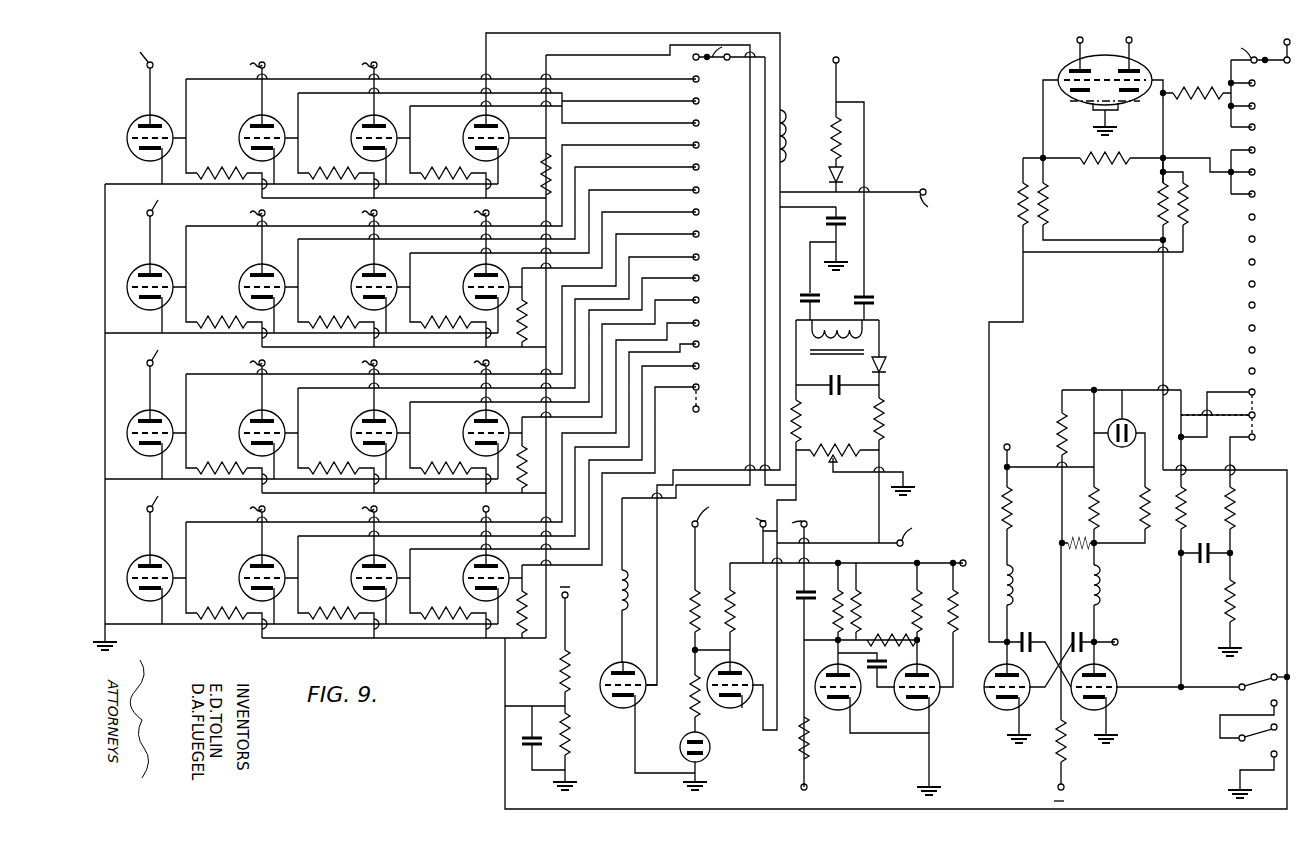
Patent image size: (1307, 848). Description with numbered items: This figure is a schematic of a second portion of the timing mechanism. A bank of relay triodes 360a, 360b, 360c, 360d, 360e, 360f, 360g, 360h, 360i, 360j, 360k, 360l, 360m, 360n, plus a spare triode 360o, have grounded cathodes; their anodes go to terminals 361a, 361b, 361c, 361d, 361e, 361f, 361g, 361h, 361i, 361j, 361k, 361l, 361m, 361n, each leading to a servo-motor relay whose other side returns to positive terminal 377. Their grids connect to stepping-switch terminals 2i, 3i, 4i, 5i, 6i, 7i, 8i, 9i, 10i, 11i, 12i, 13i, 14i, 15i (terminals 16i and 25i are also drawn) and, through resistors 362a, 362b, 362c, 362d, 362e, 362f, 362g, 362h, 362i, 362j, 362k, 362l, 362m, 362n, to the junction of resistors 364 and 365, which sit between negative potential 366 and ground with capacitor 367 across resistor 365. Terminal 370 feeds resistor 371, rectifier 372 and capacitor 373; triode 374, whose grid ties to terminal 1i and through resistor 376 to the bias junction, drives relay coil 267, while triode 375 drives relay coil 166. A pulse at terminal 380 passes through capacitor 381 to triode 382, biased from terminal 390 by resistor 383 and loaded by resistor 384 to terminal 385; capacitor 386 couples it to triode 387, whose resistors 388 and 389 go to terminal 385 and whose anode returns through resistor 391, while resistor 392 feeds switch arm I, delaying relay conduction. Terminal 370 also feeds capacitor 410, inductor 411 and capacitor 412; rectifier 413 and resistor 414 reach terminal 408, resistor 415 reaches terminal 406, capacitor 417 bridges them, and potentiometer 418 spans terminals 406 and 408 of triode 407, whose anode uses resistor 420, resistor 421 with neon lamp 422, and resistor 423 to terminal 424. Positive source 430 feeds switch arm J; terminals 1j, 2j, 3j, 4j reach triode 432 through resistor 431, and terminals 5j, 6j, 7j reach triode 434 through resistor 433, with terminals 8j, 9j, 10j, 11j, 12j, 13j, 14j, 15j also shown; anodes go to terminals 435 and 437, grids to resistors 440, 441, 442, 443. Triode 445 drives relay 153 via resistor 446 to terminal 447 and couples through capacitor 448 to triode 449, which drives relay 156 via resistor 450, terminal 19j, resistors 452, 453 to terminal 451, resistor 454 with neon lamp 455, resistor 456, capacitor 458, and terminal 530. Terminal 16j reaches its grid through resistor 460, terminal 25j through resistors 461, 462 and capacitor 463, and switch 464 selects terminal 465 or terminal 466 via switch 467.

The relay 153 is at (1012, 582).
The relay 156 is at (1108, 586).
The relay coil 166 is at (618, 612).
The relay coil 267 is at (802, 148).
The triode 360a is at (143, 118).
The triode 360b is at (247, 118).
The triode 360c is at (357, 118).
The triode 360d is at (137, 304).
The triode 360e is at (247, 267).
The triode 360f is at (355, 267).
The triode 360g is at (469, 267).
The triode 360h is at (152, 450).
The triode 360i is at (245, 413).
The triode 360j is at (355, 413).
The triode 360k is at (469, 413).
The triode 360l is at (152, 595).
The triode 360m is at (253, 559).
The triode 360n is at (359, 559).
The spare triode 360o is at (469, 559).
The terminal 361a is at (123, 77).
The terminal 361b is at (237, 77).
The terminal 361c is at (349, 77).
The terminal 361d is at (176, 225).
The terminal 361e is at (237, 232).
The terminal 361f is at (349, 232).
The terminal 361g is at (459, 232).
The terminal 361h is at (176, 373).
The terminal 361i is at (240, 380).
The terminal 361j is at (348, 380).
The terminal 361k is at (459, 380).
The terminal 361l is at (173, 518).
The terminal 361m is at (236, 526).
The terminal 361n is at (348, 526).
The resistor 362a is at (241, 172).
The resistor 362b is at (353, 172).
The resistor 362c is at (463, 172).
The resistor 362d is at (241, 321).
The resistor 362e is at (353, 321).
The resistor 362f is at (461, 321).
The resistor 362g is at (522, 342).
The resistor 362h is at (241, 467).
The resistor 362i is at (349, 467).
The resistor 362j is at (459, 467).
The resistor 362k is at (522, 488).
The resistor 362l is at (237, 613).
The resistor 362m is at (359, 613).
The resistor 362n is at (463, 613).
The resistor 364 is at (562, 672).
The resistor 365 is at (570, 755).
The negative potential 366 is at (568, 598).
The capacitor 367 is at (525, 742).
The terminal 370 is at (840, 58).
The resistor 371 is at (834, 127).
The rectifier 372 is at (846, 177).
The capacitor 373 is at (846, 224).
The triode 374 is at (462, 120).
The triode 375 is at (616, 710).
The resistor 376 is at (544, 178).
The positive potential terminal 377 is at (943, 203).
The terminal 380 is at (819, 552).
The capacitor 381 is at (830, 578).
The triode 382 is at (857, 708).
The resistor 383 is at (812, 760).
The resistor 384 is at (852, 584).
The positive potential terminal 385 is at (962, 560).
The capacitor 386 is at (890, 660).
The triode 387 is at (935, 708).
The resistor 388 is at (932, 641).
The resistor 389 is at (968, 624).
The negative potential terminal 390 is at (808, 790).
The resistor 391 is at (900, 638).
The resistor 392 is at (862, 600).
The terminal 406 is at (739, 538).
The triode 407 is at (747, 708).
The terminal 408 is at (858, 528).
The capacitor 410 is at (868, 300).
The inductor 411 is at (837, 333).
The capacitor 412 is at (795, 300).
The rectifier 413 is at (884, 358).
The resistor 414 is at (884, 402).
The resistor 415 is at (800, 432).
The capacitor 417 is at (834, 400).
The potentiometer 418 is at (862, 460).
The resistor 420 is at (728, 632).
The resistor 421 is at (688, 710).
The neon lamp 422 is at (710, 756).
The resistor 423 is at (692, 626).
The terminal 424 is at (719, 541).
The source of positive potential 430 is at (1282, 39).
The resistor 431 is at (1207, 102).
The triode 432 is at (1150, 68).
The resistor 433 is at (1110, 164).
The triode 434 is at (1064, 62).
The terminal 435 is at (1134, 40).
The terminal 437 is at (1076, 40).
The resistor 440 is at (1156, 198).
The resistor 441 is at (1050, 210).
The resistor 442 is at (1188, 212).
The resistor 443 is at (1019, 190).
The triode 445 is at (1001, 710).
The resistor 446 is at (1028, 526).
The positive potential terminal 447 is at (1010, 450).
The capacitor 448 is at (1018, 638).
The triode 449 is at (1108, 708).
The resistor 450 is at (1088, 501).
The negative potential terminal 451 is at (1065, 790).
The resistor 452 is at (1060, 422).
The resistor 453 is at (1054, 746).
The resistor 454 is at (1144, 490).
The neon lamp 455 is at (1128, 414).
The resistor 456 is at (1092, 538).
The capacitor 458 is at (1085, 634).
The resistor 460 is at (1176, 536).
The resistor 461 is at (1236, 520).
The resistor 462 is at (1236, 612).
The capacitor 463 is at (1212, 565).
The switch 464 is at (1238, 676).
The terminal 465 is at (1270, 664).
The terminal 466 is at (1268, 700).
The switch 467 is at (1240, 750).
The terminal 530 is at (1138, 641).
The terminal 1i is at (729, 63).
The terminal 2i is at (707, 78).
The terminal 3i is at (707, 100).
The terminal 4i is at (707, 122).
The terminal 5i is at (707, 144).
The terminal 6i is at (707, 166).
The terminal 7i is at (707, 189).
The terminal 8i is at (707, 211).
The terminal 9i is at (707, 233).
The terminal 10i is at (713, 256).
The terminal 11i is at (713, 277).
The terminal 12i is at (713, 299).
The terminal 13i is at (713, 322).
The terminal 14i is at (713, 343).
The terminal 15i is at (713, 365).
The input terminal 16i is at (713, 386).
The input terminal 25i is at (713, 405).
The terminal 1j is at (1256, 50).
The terminal 2j is at (1263, 82).
The terminal 3j is at (1263, 105).
The terminal 4j is at (1263, 126).
The terminal 5j is at (1263, 149).
The terminal 6j is at (1263, 171).
The terminal 7j is at (1263, 193).
The terminal 8j is at (1263, 216).
The terminal 9j is at (1263, 238).
The terminal 10j is at (1269, 261).
The terminal 11j is at (1269, 283).
The terminal 12j is at (1269, 304).
The terminal 13j is at (1269, 327).
The terminal 14j is at (1269, 349).
The terminal 15j is at (1269, 370).
The terminal 16j is at (1235, 409).
The terminal 19j is at (1235, 410).
The terminal 25j is at (1260, 452).